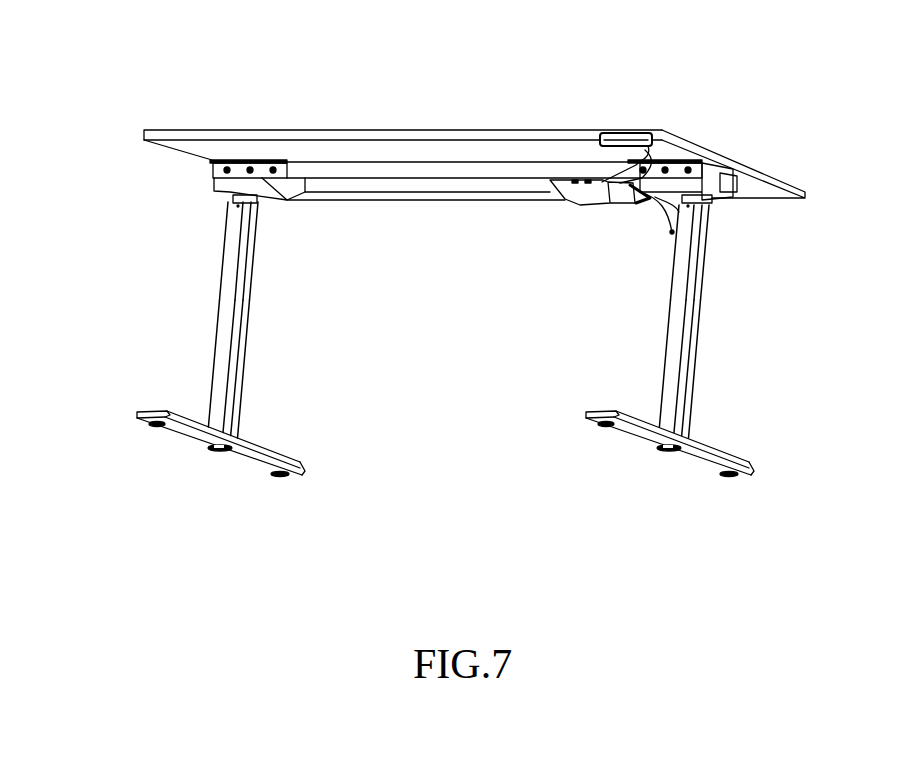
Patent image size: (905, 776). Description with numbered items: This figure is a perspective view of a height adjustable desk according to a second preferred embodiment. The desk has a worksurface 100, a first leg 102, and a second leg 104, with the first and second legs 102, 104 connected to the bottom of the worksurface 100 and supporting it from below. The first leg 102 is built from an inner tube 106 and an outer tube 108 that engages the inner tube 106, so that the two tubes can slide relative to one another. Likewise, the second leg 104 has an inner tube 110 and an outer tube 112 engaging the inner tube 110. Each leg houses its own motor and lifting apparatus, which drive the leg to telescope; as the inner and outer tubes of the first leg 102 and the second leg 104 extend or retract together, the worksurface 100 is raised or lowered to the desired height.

The worksurface 100 is at (388, 130).
The first leg 102 is at (170, 335).
The second leg 104 is at (721, 341).
The inner tube 106 is at (226, 194).
The outer tube 108 is at (232, 307).
The inner tube 110 is at (713, 205).
The outer tube 112 is at (702, 300).